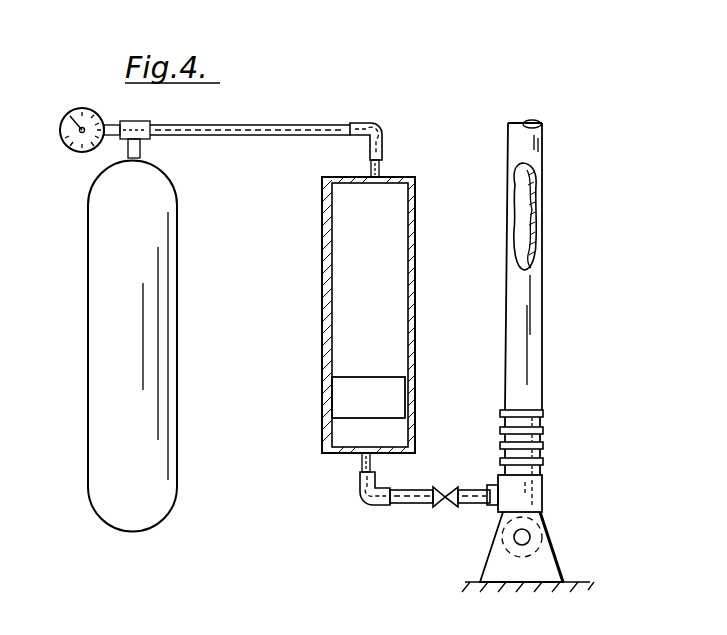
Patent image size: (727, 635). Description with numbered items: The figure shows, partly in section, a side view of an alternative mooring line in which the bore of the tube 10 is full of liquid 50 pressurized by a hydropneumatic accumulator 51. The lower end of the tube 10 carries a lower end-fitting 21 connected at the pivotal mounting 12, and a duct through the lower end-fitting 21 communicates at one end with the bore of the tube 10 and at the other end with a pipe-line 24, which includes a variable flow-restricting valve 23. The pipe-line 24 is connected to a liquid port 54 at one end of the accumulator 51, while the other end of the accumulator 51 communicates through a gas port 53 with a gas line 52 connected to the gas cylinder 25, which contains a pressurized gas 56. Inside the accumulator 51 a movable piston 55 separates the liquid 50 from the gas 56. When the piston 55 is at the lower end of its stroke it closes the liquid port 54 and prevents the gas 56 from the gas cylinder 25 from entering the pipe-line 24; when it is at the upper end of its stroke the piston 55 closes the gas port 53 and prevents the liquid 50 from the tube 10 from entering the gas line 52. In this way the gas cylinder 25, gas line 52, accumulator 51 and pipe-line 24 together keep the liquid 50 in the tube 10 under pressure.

The tube 10 is at (527, 364).
The pivotal mounting 12 is at (547, 566).
The lower end-fitting 21 is at (545, 444).
The variable flow-restricting valve 23 is at (447, 506).
The pipe-line 24 is at (412, 504).
The gas cylinder 25 is at (90, 340).
The liquid 50 is at (525, 234).
The hydropneumatic accumulator 51 is at (416, 311).
The gas line 52 is at (257, 127).
The gas port 53 is at (379, 176).
The liquid port 54 is at (362, 462).
The movable piston 55 is at (392, 396).
The pressurized gas 56 is at (400, 234).